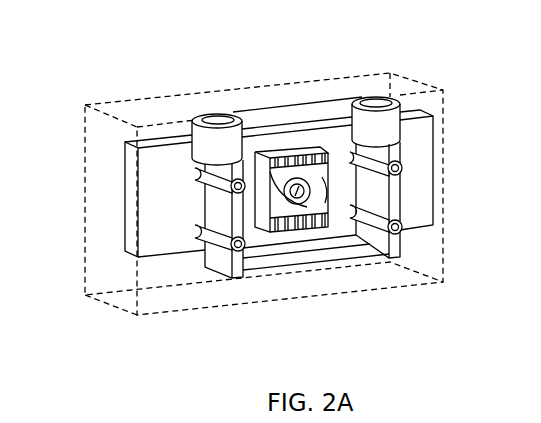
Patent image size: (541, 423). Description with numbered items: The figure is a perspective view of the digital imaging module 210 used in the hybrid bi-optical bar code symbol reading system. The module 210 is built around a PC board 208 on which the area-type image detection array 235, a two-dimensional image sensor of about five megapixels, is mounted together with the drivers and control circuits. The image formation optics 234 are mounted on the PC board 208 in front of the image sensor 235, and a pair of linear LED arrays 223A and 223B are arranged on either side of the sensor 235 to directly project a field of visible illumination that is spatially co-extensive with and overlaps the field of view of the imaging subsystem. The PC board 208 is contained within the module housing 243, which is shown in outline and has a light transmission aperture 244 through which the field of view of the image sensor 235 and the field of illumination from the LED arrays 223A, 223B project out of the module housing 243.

The PC board 208 is at (128, 237).
The digital imaging module 210 is at (283, 202).
The LED array 223A is at (313, 157).
The LED array 223B is at (307, 230).
The image formation optics 234 is at (272, 138).
The area-type image detection array 235 is at (252, 240).
The module housing 243 is at (140, 105).
The light transmission aperture 244 is at (320, 205).